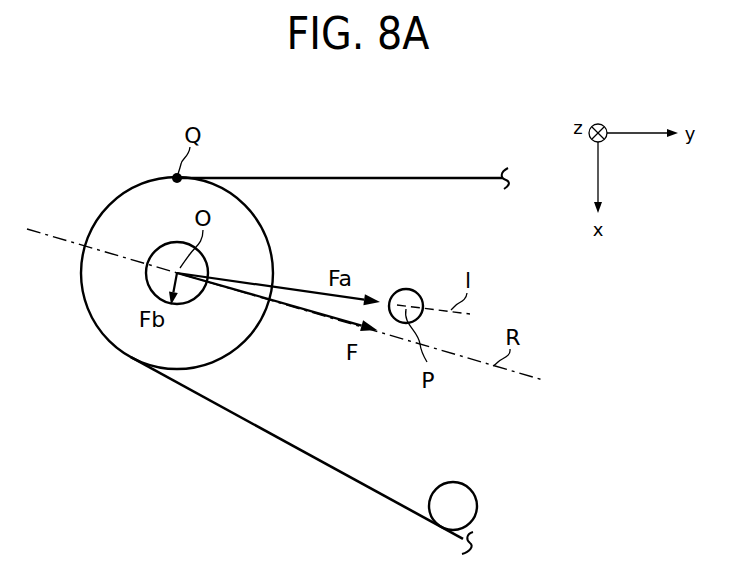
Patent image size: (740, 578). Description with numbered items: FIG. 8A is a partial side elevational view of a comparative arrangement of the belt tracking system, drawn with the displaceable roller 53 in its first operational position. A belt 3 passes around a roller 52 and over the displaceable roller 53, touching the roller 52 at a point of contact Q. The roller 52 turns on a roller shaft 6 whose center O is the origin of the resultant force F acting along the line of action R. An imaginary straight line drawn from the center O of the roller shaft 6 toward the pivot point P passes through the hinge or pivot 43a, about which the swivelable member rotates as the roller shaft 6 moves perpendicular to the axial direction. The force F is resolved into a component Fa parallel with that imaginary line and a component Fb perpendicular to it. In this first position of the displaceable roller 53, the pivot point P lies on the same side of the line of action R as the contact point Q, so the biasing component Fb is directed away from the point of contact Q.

The intermediate transfer belt 3 is at (354, 178).
The drive roller 52 is at (124, 200).
The roller shaft 6 is at (154, 254).
The hinge or pivot 43a is at (406, 290).
The displaceable roller 53 is at (454, 484).